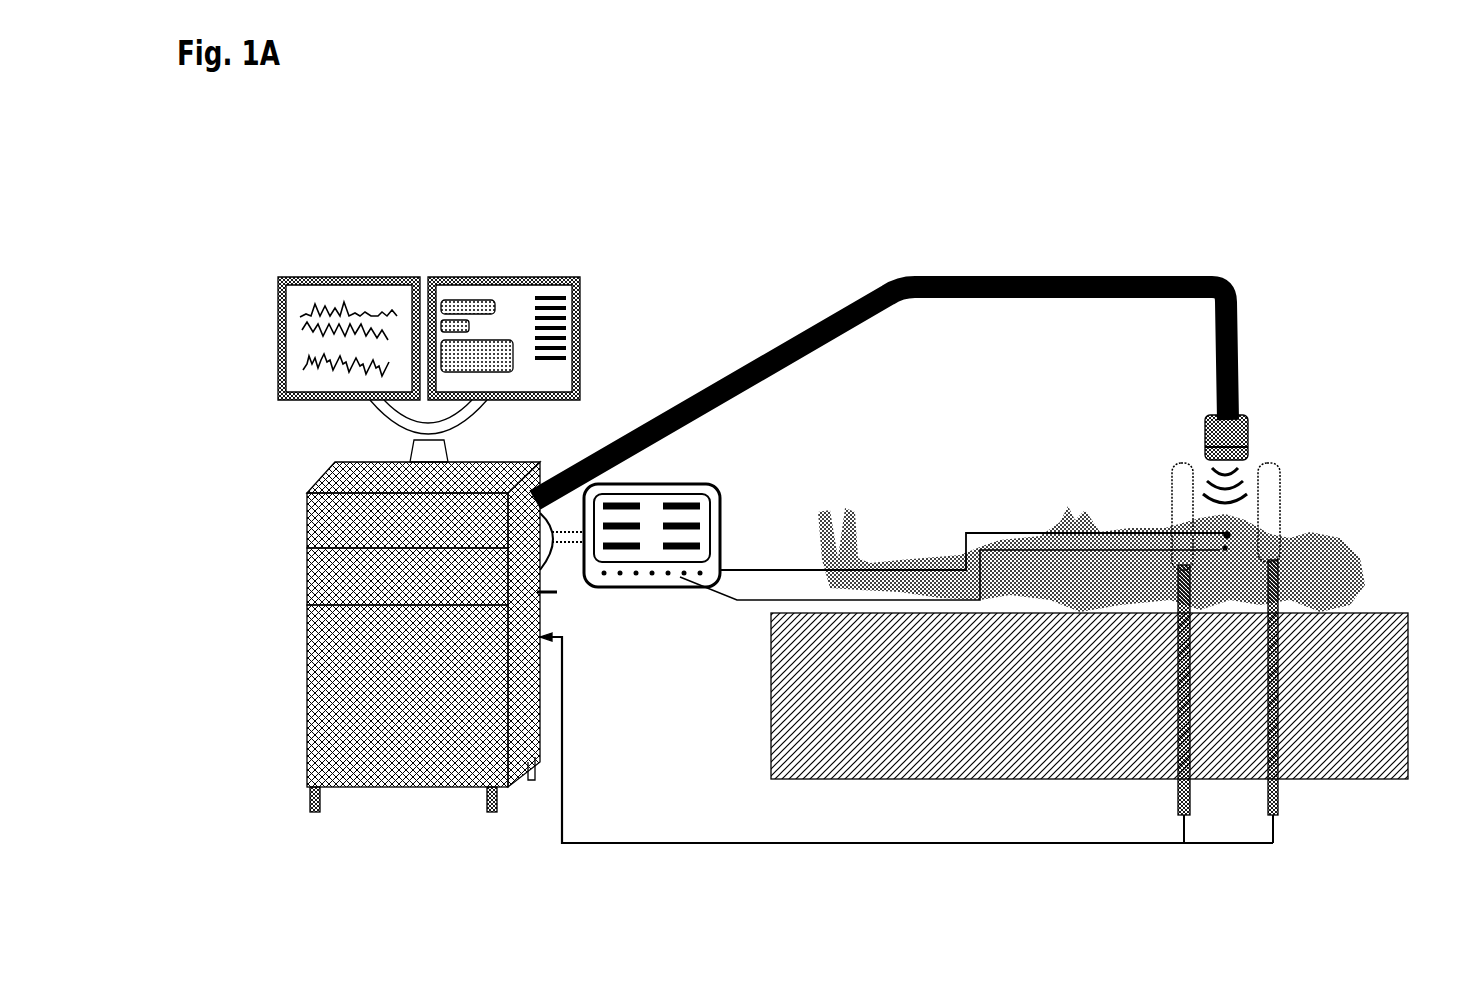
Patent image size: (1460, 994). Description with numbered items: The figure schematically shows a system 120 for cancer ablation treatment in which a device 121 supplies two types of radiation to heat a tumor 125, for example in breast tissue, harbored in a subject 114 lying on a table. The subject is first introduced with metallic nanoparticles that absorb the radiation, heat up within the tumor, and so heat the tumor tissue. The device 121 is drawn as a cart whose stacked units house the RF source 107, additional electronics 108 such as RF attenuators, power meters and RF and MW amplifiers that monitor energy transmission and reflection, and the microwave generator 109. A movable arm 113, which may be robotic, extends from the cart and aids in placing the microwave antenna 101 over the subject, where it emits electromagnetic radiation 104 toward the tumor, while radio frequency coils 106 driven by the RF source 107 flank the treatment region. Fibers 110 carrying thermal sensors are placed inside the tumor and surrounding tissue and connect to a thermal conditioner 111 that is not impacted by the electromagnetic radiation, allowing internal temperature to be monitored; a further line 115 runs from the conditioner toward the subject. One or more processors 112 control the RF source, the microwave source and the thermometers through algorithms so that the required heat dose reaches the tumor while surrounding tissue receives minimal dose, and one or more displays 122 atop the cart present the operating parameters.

The system 120 is at (598, 84).
The display 122 is at (247, 308).
The processor 112 is at (597, 340).
The device 121 is at (445, 857).
The RF source 107 is at (307, 506).
The additional electronics 108 is at (307, 568).
The microwave generator 109 is at (307, 678).
The movable arm 113 is at (905, 280).
The thermal conditioner 111 is at (727, 490).
The fibers 110 is at (735, 600).
The catheter / sensing device 115 is at (975, 528).
The subject 114 is at (1358, 535).
The microwave antenna 101 is at (1260, 423).
The electromagnetic radiation 104 is at (1213, 463).
The radio frequency coils 106 is at (1170, 490).
The tumor 125 is at (1237, 555).